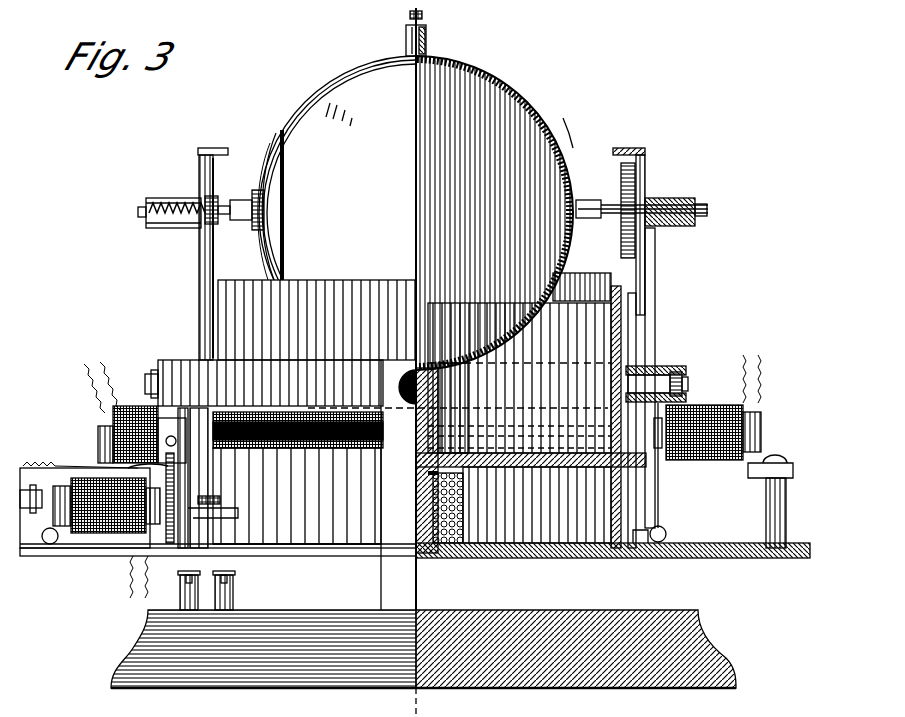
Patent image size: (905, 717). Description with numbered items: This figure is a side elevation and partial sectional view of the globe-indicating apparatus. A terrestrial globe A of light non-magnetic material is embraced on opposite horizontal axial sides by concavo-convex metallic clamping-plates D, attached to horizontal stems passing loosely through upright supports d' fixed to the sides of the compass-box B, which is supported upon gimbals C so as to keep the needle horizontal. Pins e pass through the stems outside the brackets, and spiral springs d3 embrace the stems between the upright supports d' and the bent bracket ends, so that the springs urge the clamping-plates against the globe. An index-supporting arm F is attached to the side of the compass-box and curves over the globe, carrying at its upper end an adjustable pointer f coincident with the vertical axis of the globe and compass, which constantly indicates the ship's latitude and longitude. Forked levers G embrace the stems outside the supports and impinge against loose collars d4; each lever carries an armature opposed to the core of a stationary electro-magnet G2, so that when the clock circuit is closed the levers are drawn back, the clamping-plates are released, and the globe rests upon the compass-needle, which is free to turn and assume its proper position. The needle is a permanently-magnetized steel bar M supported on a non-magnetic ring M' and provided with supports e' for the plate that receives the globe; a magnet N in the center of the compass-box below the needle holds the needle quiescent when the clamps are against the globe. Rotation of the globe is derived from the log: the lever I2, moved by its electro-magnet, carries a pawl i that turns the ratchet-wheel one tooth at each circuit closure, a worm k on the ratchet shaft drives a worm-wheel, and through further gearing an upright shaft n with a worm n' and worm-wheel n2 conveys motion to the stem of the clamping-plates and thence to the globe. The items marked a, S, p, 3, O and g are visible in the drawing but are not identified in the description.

The terrestrial globe A is at (417, 216).
The globe meridian ring a is at (276, 205).
The adjustable pointer or index f is at (416, 8).
The index-supporting arm F is at (418, 30).
The clamping-plate D is at (553, 133).
The compass-box B is at (314, 412).
The gimbals C is at (254, 404).
The upright support d' is at (429, 246).
The upright shaft n is at (226, 256).
The worm n' is at (222, 200).
The pin e is at (198, 210).
The worm-wheel n2 is at (612, 163).
The loose collar d4 is at (655, 190).
The spiral spring d3 is at (690, 195).
The forked lever G is at (647, 270).
The top plate S is at (575, 285).
The inner casing p is at (519, 378).
The support rod e' is at (451, 458).
The permanently-magnetized steel bar M is at (531, 447).
The non-magnetic ring M' is at (537, 505).
The magnet N is at (462, 510).
The lever I2 is at (90, 497).
The armature block 3 is at (128, 434).
The pivot O is at (172, 440).
The pawl or dog i is at (148, 476).
The worm k is at (175, 470).
The stationary electro-magnet G2 is at (672, 397).
The rod g is at (647, 440).